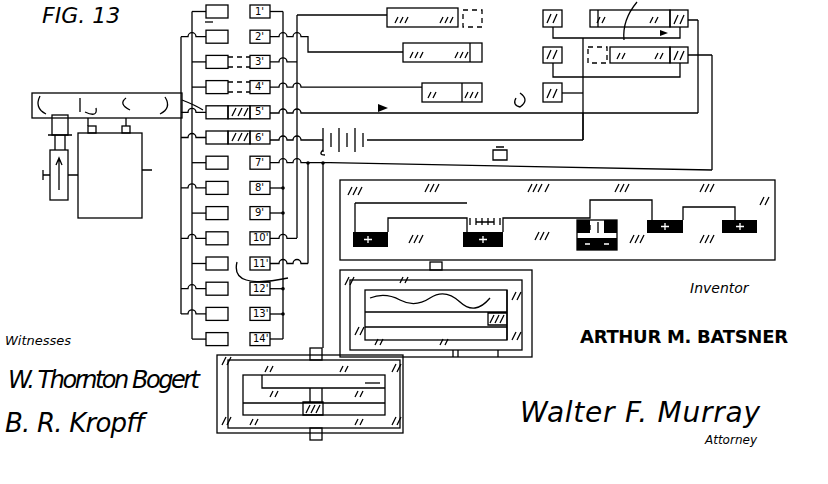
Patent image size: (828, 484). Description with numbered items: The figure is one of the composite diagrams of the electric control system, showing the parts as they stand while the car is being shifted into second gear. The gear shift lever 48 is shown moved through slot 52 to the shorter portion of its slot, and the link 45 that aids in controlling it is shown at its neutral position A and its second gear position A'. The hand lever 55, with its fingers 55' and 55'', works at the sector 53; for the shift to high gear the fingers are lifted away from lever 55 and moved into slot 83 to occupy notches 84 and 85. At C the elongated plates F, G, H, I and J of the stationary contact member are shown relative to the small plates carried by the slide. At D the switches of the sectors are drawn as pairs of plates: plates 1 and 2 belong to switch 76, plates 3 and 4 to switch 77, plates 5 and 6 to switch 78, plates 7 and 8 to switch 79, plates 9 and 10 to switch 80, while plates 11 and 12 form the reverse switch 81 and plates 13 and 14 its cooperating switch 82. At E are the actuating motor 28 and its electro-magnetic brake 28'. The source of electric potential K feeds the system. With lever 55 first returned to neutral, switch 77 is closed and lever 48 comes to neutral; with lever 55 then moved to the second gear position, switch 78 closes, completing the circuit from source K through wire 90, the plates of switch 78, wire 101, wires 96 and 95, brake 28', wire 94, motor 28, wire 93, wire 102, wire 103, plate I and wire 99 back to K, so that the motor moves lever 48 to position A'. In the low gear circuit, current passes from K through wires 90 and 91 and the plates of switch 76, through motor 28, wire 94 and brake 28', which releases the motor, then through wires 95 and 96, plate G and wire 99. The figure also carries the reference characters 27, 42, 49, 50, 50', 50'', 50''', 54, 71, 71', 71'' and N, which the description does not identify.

The contact plate 1 is at (210, 11).
The contact plate 2 is at (204, 36).
The contact plate 3 is at (210, 61).
The contact plate 4 is at (210, 87).
The contact plate 5 is at (204, 112).
The contact plate 6 is at (204, 137).
The contact plate 7 is at (210, 162).
The contact plate 8 is at (204, 187).
The contact plate 9 is at (210, 213).
The contact plate 10 is at (204, 238).
The contact plate 11 is at (210, 263).
The contact plate 12 is at (204, 288).
The contact plate 13 is at (204, 313).
The contact plate 14 is at (210, 339).
The conductor 27 is at (347, 52).
The actuating motor 28 is at (103, 187).
The electro-magnetic brake 28' is at (44, 157).
The casing 42 is at (546, 338).
The link 45 is at (385, 410).
The gear shift lever 48 is at (323, 415).
The spring 49 is at (293, 412).
The contact bar 50 is at (261, 373).
The contact bar 50' is at (499, 285).
The contact bar 50'' is at (336, 319).
The contact bar 50''' is at (447, 400).
The slot 52 is at (313, 384).
The sector 53 is at (723, 187).
The conductor 54 is at (428, 215).
The hand lever 55 is at (521, 242).
The finger 55' is at (503, 201).
The finger 55'' is at (561, 246).
The electromagnet 71 is at (370, 228).
The electromagnet 71' is at (462, 235).
The electromagnet 71'' is at (588, 218).
The switch 76 is at (213, 23).
The switch 77 is at (212, 72).
The switch 78 is at (212, 127).
The switch 79 is at (205, 176).
The switch 80 is at (206, 228).
The switch 81 is at (205, 278).
The cooperating switch 82 is at (205, 328).
The slot 83 is at (687, 203).
The notch 84 is at (662, 213).
The notch 85 is at (742, 213).
The wire 90 is at (326, 147).
The wire 91 is at (288, 73).
The wire 93 is at (134, 105).
The wire 94 is at (78, 105).
The wire 95 is at (108, 93).
The wire 96 is at (180, 257).
The wire 99 is at (583, 135).
The wire 101 is at (192, 150).
The wire 102 is at (203, 108).
The wire 103 is at (421, 113).
The neutral position A is at (324, 394).
The second gear position A' is at (444, 309).
The contact plate showing C is at (514, 58).
The switch showing D is at (267, 278).
The motor and brake showing E is at (70, 200).
The elongated plate F is at (434, 17).
The elongated plate G is at (442, 52).
The elongated plate H is at (452, 92).
The elongated plate I is at (639, 18).
The elongated plate J is at (638, 55).
The source of electric potential K is at (343, 128).
The relay box N is at (557, 220).